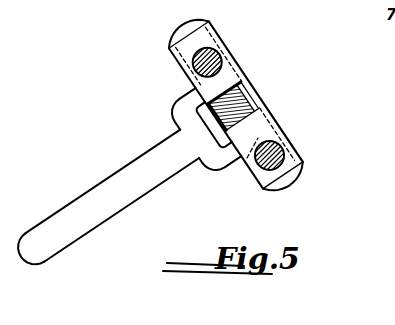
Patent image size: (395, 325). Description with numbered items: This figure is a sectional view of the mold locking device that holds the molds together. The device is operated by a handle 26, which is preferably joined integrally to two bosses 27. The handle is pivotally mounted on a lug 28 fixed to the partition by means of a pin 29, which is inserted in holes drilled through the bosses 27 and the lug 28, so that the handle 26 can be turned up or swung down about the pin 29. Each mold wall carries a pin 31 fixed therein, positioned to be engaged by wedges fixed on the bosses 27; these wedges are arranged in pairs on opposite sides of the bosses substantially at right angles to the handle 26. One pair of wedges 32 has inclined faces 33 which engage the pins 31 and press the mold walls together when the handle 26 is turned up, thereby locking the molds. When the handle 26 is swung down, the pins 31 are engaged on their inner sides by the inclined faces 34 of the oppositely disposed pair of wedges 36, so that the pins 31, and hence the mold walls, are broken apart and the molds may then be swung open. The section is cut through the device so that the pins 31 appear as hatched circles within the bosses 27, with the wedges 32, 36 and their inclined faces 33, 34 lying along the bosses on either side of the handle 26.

The handle 26 is at (108, 209).
The bosses 27 is at (186, 77).
The lug 28 is at (258, 104).
The pin 29 is at (185, 33).
The pin 31 is at (221, 58).
The wedges 32 is at (212, 19).
The inclined faces 33 is at (213, 36).
The inclined faces 34 is at (239, 69).
The wedges 36 is at (221, 82).